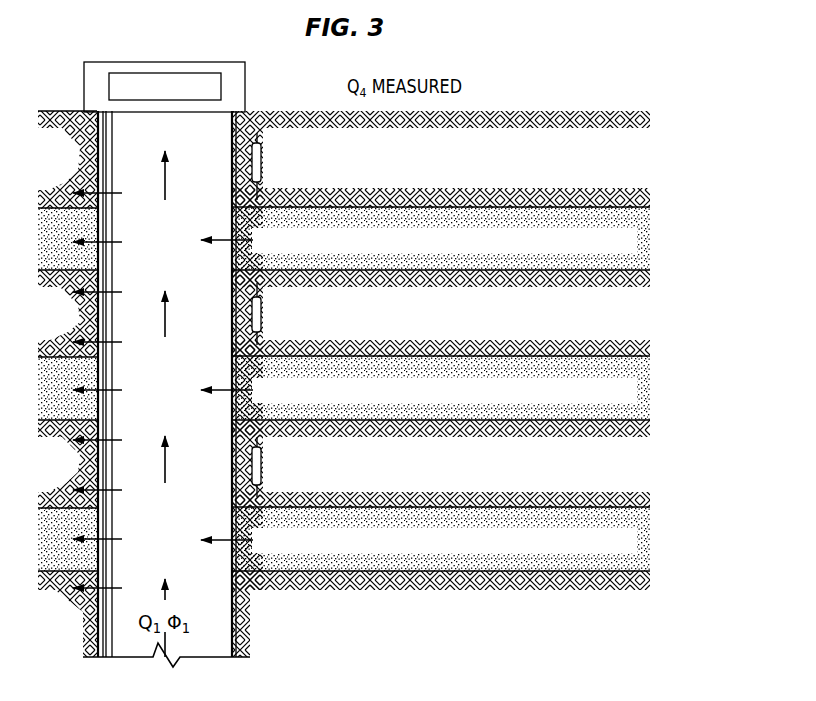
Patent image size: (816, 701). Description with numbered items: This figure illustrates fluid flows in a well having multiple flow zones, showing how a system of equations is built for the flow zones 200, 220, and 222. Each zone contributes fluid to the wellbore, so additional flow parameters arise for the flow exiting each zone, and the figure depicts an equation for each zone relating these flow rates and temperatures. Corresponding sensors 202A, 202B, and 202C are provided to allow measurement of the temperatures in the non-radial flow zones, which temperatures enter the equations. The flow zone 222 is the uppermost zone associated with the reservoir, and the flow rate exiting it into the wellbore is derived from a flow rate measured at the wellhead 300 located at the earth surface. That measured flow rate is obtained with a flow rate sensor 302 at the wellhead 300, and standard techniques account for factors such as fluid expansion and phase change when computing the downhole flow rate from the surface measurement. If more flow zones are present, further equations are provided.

The wellhead 300 is at (245, 73).
The flow rate sensor 302 is at (221, 87).
The sensor 202A is at (261, 466).
The sensor 202B is at (261, 309).
The sensor 202C is at (261, 163).
The flow zone 200 is at (665, 507).
The flow zone 220 is at (665, 356).
The flow zone 222 is at (665, 207).